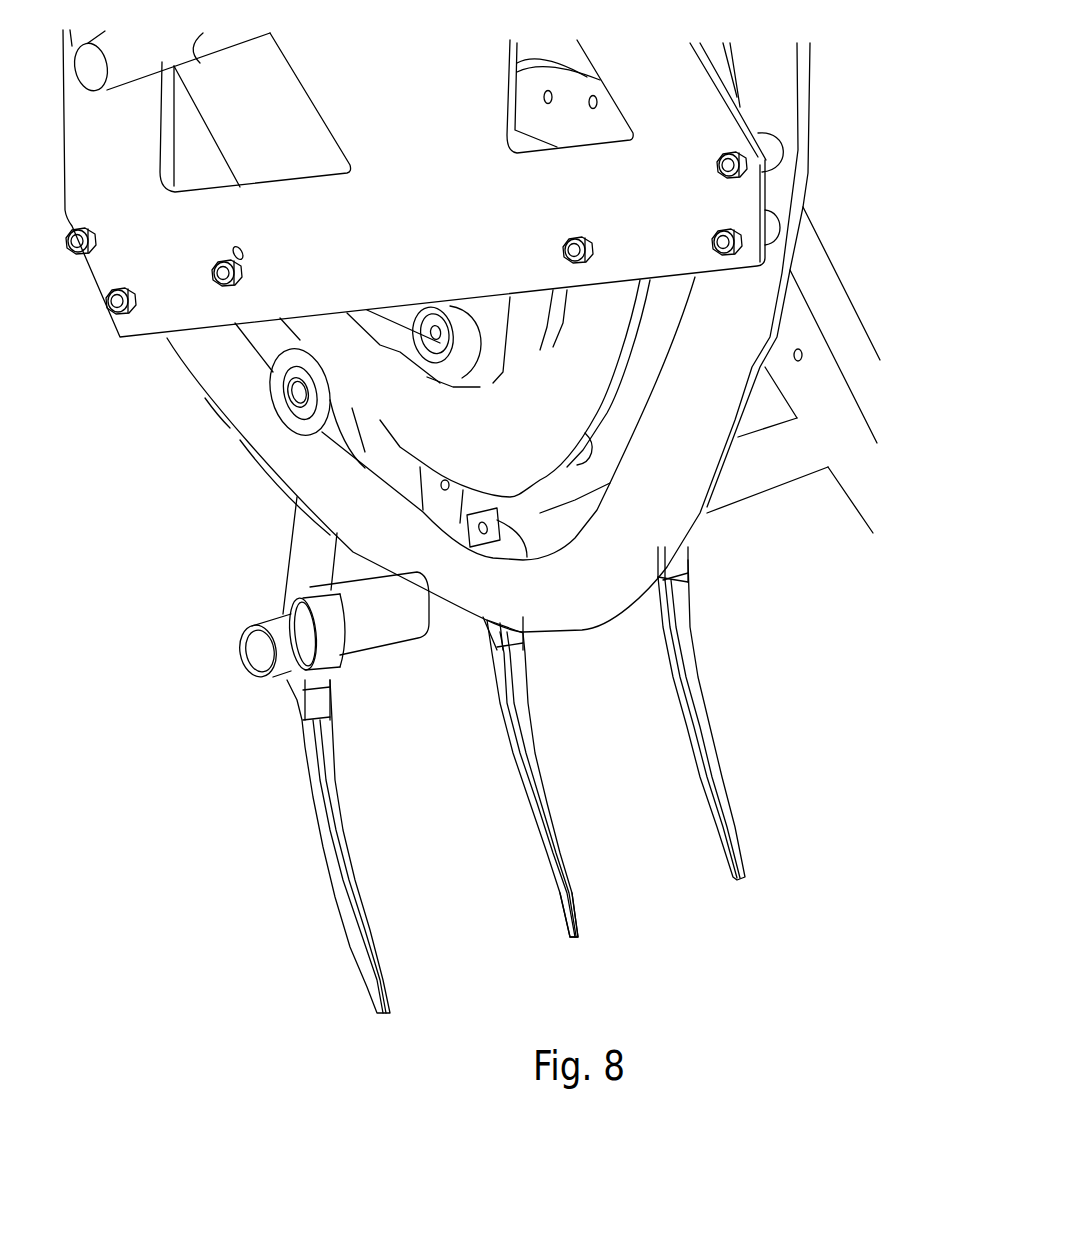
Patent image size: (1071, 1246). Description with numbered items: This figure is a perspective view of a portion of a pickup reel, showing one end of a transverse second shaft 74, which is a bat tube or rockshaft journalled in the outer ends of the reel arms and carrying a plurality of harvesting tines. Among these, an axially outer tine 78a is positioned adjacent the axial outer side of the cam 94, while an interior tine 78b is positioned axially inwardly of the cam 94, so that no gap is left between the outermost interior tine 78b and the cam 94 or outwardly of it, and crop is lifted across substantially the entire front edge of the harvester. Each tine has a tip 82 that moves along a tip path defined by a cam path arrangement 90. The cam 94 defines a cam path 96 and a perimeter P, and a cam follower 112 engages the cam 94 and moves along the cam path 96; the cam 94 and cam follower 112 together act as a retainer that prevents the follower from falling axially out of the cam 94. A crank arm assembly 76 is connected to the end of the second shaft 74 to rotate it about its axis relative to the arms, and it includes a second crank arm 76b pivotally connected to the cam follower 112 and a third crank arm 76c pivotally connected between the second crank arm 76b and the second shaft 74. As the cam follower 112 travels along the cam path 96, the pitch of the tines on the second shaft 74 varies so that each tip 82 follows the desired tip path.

The cam 94 is at (213, 363).
The perimeter P is at (223, 420).
The cam path arrangement 90 is at (262, 428).
The cam follower 112 is at (310, 363).
The cam path 96 is at (560, 463).
The second crank arm 76b is at (290, 557).
The crank arm assembly 76 is at (222, 601).
The second shaft 74 is at (240, 663).
The third crank arm 76c is at (367, 660).
The axially outer tine 78a is at (337, 890).
The interior tine 78b is at (543, 865).
The tip 82 is at (571, 945).